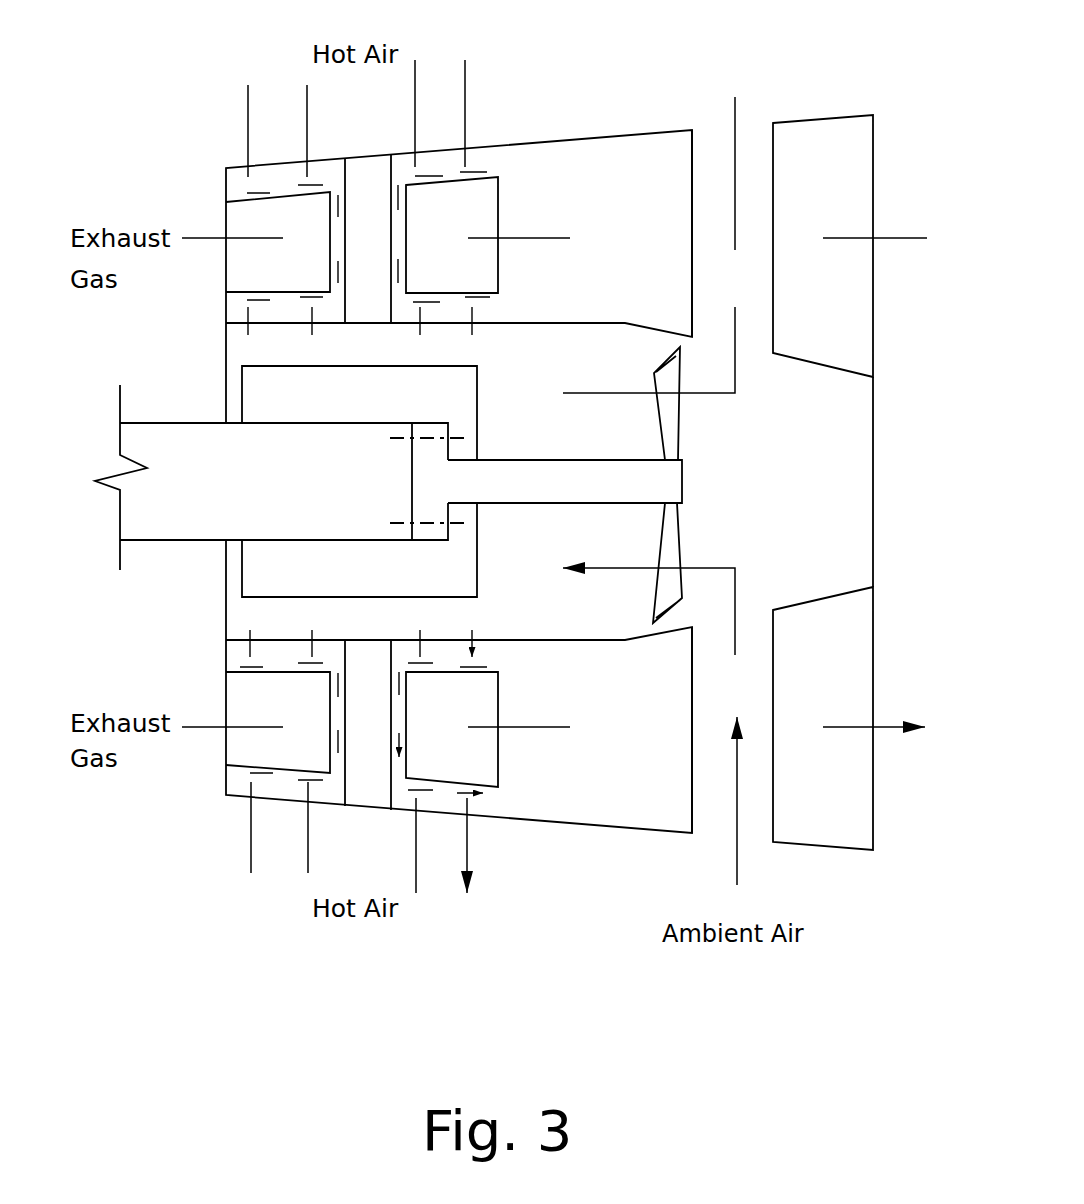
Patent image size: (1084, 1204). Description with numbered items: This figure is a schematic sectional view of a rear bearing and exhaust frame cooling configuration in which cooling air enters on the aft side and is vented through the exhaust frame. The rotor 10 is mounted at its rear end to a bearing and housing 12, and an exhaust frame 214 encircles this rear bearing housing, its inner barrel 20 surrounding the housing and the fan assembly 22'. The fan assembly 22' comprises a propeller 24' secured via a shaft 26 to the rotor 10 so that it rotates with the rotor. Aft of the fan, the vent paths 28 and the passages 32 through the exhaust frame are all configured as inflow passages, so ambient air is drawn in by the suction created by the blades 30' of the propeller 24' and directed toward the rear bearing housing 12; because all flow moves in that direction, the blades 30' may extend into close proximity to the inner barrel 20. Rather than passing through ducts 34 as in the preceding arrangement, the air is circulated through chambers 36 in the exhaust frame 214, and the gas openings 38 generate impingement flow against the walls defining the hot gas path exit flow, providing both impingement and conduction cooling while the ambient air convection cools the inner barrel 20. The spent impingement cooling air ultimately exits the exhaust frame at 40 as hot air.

The exhaust frame 214 is at (225, 162).
The ducts 34 is at (393, 167).
The chambers 36 is at (332, 312).
The gas openings 38 is at (312, 318).
The exit of spent impingement cooling air 40 is at (478, 125).
The outflow vent passage 32 is at (773, 167).
The vent path 28 is at (773, 787).
The bearing and housing 12 is at (242, 392).
The rotor 10 is at (173, 522).
The shaft 26 is at (532, 483).
The blades 30' is at (670, 485).
The propeller 24' is at (700, 481).
The fan assembly 22' is at (617, 491).
The inner barrel 20 is at (595, 650).